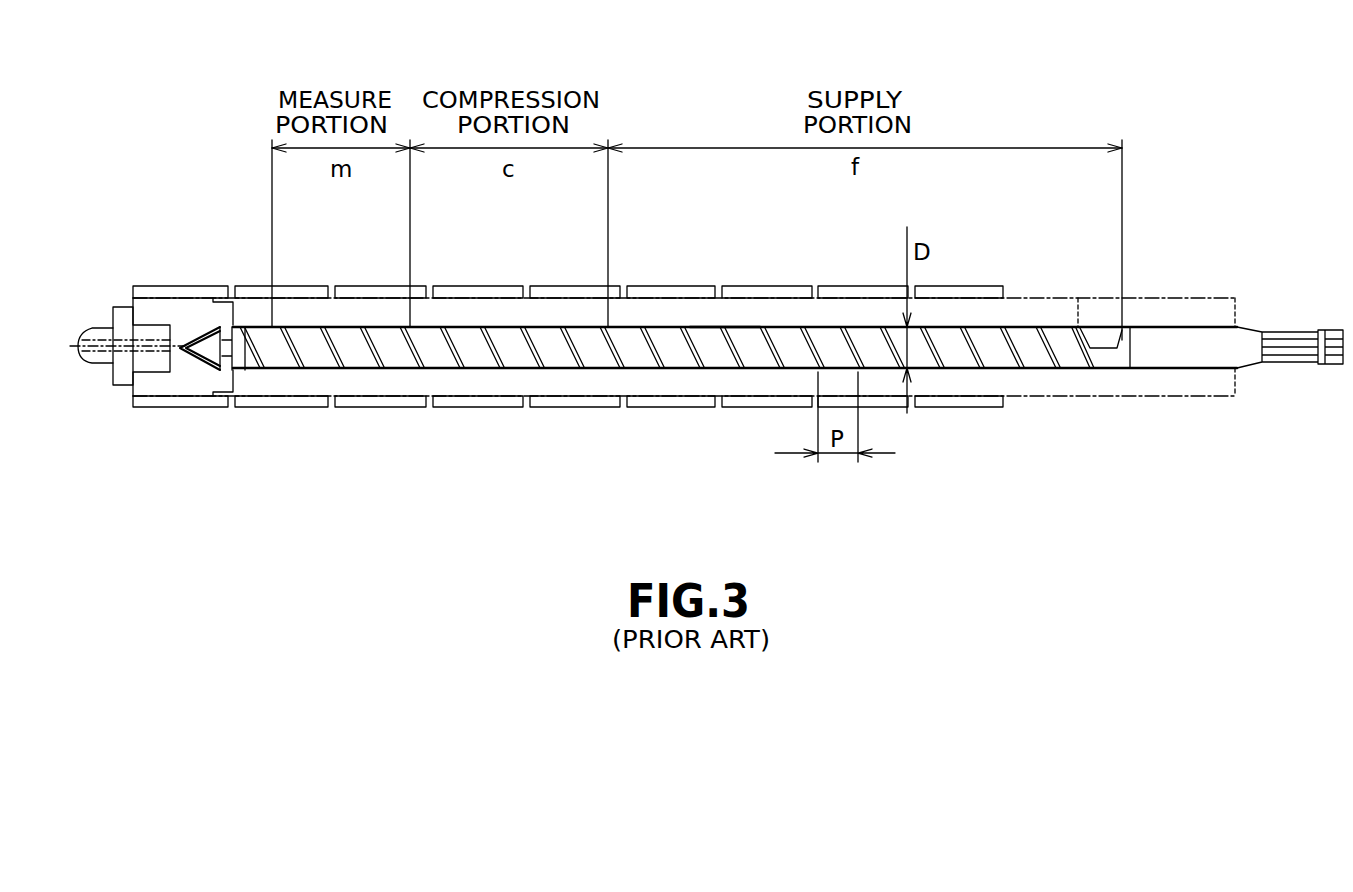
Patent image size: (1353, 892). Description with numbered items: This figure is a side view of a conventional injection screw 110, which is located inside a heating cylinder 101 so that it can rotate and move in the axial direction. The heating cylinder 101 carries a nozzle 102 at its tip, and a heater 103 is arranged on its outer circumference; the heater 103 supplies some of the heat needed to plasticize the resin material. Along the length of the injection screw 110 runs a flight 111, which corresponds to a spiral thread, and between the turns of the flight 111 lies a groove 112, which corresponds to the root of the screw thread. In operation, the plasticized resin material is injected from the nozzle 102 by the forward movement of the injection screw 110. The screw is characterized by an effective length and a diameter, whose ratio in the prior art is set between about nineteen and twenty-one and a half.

The heating cylinder 101 is at (470, 382).
The nozzle 102 is at (95, 378).
The heater 103 is at (585, 402).
The injection screw 110 is at (727, 369).
The flight 111 is at (346, 326).
The groove 112 is at (744, 325).